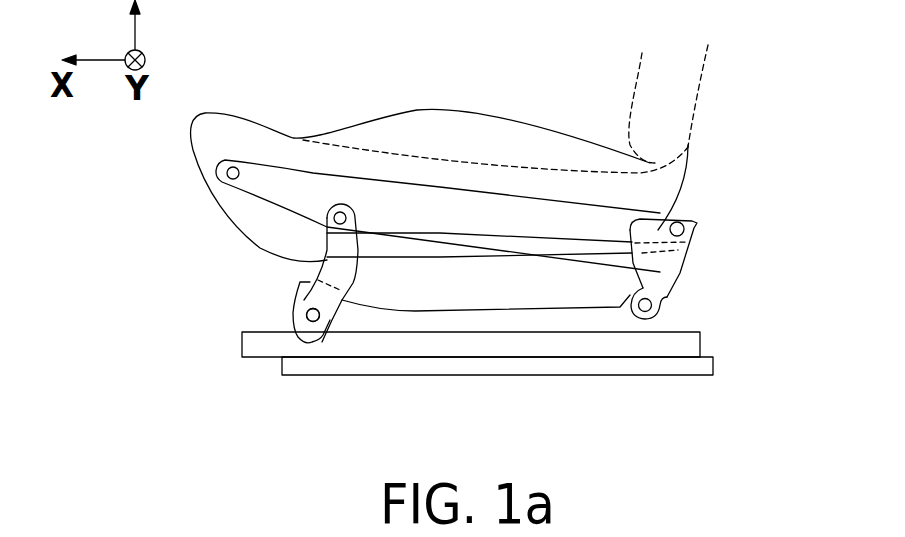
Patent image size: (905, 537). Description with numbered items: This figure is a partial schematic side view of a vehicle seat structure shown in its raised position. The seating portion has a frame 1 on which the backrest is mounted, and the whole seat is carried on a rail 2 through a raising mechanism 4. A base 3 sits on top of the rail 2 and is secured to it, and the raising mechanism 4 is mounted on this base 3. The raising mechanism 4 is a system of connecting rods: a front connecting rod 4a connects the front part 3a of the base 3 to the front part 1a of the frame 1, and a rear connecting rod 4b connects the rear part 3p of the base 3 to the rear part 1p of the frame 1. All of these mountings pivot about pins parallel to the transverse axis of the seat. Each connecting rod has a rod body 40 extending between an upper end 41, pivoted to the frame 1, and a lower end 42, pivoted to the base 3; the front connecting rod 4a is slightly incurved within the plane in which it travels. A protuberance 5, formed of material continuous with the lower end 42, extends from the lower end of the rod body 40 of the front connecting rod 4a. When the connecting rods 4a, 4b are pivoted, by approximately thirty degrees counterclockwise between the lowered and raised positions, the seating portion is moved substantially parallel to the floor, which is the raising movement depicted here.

The frame 1 is at (605, 218).
The front part of the frame 1a is at (253, 193).
The rear part of the frame 1p is at (623, 220).
The rail 2 is at (722, 325).
The base 3 is at (442, 362).
The front part of the base 3a is at (300, 293).
The rear part of the base 3p is at (617, 320).
The raising mechanism 4 is at (364, 277).
The front connecting rod 4a is at (330, 273).
The rear connecting rod 4b is at (330, 240).
The rod body 40 is at (340, 252).
The upper end of the connecting rod 41 is at (327, 223).
The lower end of the connecting rod 42 is at (658, 285).
The protuberance 5 is at (318, 328).